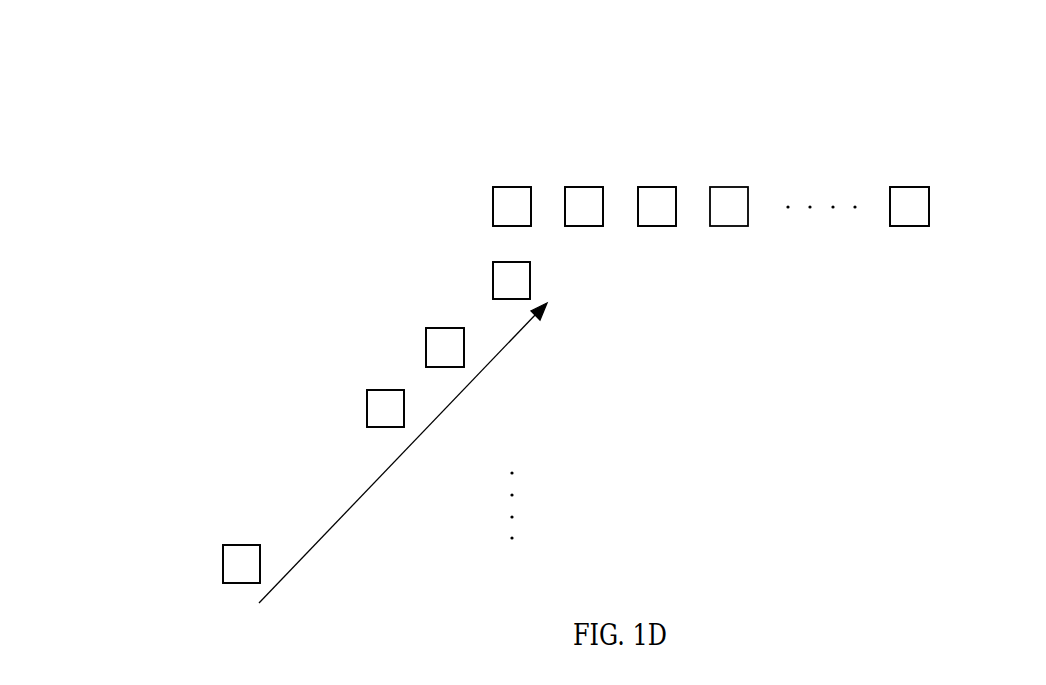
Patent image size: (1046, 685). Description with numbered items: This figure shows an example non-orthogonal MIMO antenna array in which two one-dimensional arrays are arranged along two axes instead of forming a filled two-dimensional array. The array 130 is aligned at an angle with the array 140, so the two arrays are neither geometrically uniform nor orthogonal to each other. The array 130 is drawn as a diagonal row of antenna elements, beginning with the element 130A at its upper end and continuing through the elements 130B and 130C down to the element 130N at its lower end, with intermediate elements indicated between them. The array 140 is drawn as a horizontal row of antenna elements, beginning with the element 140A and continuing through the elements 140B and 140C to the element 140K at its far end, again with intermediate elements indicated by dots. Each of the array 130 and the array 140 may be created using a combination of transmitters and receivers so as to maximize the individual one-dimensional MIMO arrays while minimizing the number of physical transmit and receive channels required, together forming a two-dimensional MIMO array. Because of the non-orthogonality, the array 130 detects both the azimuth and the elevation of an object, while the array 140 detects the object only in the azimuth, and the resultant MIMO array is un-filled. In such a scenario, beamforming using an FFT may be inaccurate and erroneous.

The array 130 is at (237, 328).
The block 130A is at (494, 270).
The block 130B is at (427, 339).
The block 130C is at (368, 402).
The block 130N is at (224, 561).
The array 140 is at (745, 88).
The block 140A is at (512, 192).
The block 140B is at (587, 192).
The block 140C is at (658, 192).
The block 140K is at (910, 192).